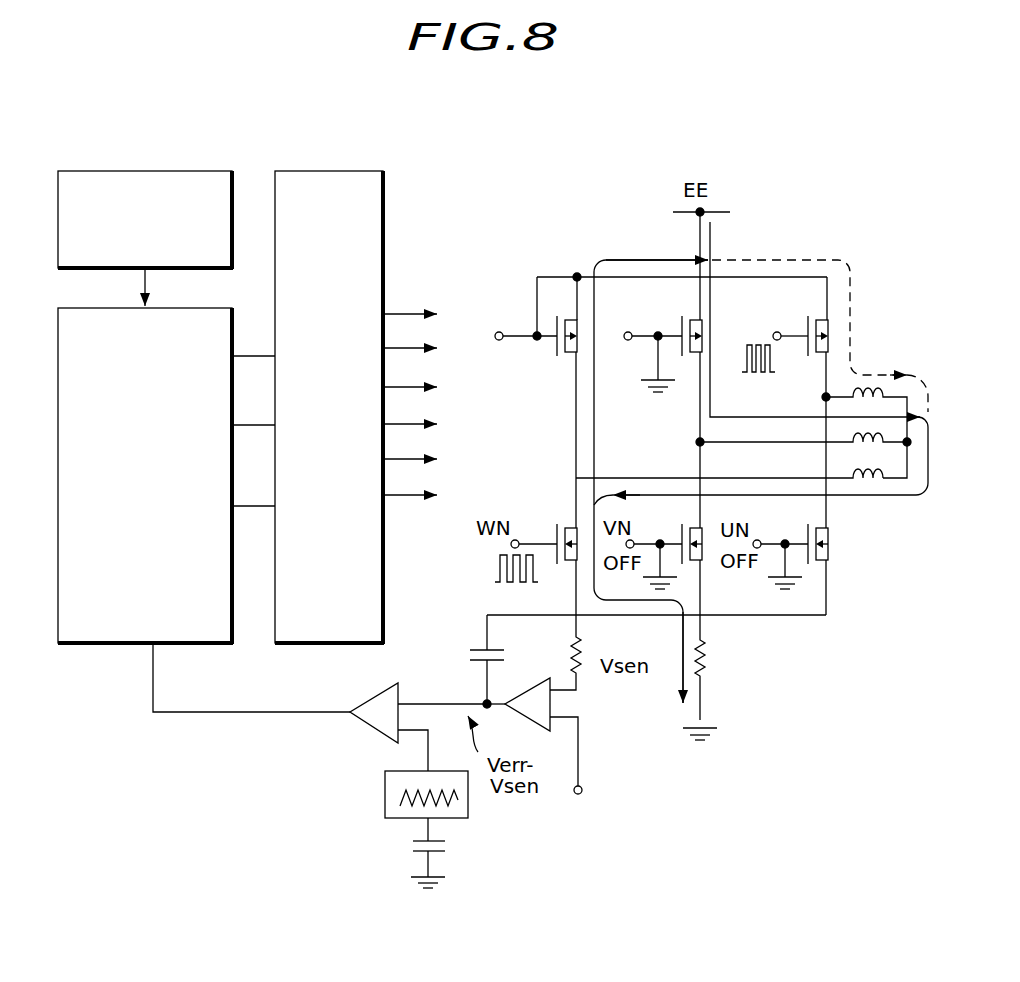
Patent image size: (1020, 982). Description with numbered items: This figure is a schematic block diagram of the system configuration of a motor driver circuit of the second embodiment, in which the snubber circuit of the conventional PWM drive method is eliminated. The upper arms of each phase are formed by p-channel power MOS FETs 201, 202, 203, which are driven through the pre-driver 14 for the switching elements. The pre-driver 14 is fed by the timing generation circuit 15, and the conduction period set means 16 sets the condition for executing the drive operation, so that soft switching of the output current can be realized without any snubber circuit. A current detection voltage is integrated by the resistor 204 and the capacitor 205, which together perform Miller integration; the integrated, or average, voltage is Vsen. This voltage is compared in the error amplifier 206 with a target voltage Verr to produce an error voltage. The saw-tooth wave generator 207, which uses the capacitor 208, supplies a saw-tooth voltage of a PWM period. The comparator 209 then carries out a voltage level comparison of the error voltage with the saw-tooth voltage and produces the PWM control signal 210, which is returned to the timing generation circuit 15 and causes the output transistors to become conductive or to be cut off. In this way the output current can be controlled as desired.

The pre-driver 14 is at (340, 171).
The timing generation circuit 15 is at (100, 645).
The conduction period set means 16 is at (92, 171).
The p-channel power MOS FET 201 is at (832, 318).
The p-channel power MOS FET 202 is at (706, 318).
The p-channel power MOS FET 203 is at (575, 318).
The resistor 204 is at (590, 652).
The capacitor 205 is at (503, 652).
The error amplifier 206 is at (555, 707).
The saw-tooth wave generator 207 is at (385, 797).
The capacitor 208 is at (401, 860).
The comparator 209 is at (365, 725).
The PWM control signal 210 is at (153, 698).